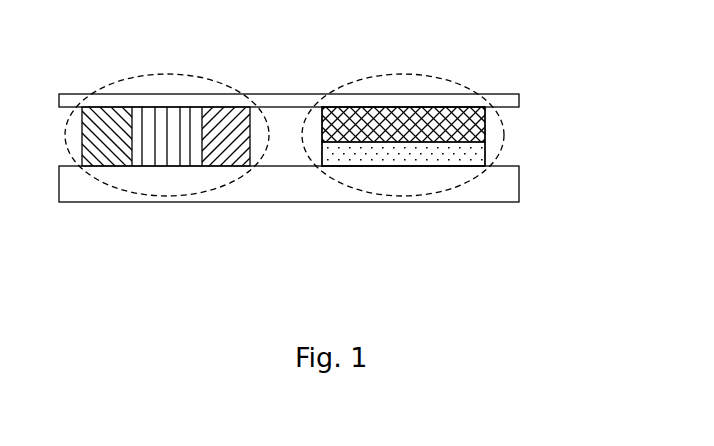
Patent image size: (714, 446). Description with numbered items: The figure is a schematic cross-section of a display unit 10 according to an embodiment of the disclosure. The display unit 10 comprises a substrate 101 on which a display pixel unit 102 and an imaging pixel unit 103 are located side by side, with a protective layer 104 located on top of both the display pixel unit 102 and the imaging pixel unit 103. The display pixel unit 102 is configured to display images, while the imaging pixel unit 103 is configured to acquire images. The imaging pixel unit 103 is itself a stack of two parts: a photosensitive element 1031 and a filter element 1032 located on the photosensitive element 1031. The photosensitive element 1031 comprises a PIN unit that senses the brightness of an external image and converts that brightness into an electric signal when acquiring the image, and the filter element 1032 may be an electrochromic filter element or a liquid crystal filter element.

The display unit 10 is at (78, 43).
The substrate 101 is at (510, 179).
The display pixel unit 102 is at (162, 196).
The imaging pixel unit 103 is at (421, 155).
The photosensitive element 1031 is at (365, 147).
The filter element 1032 is at (360, 122).
The protective layer 104 is at (508, 100).